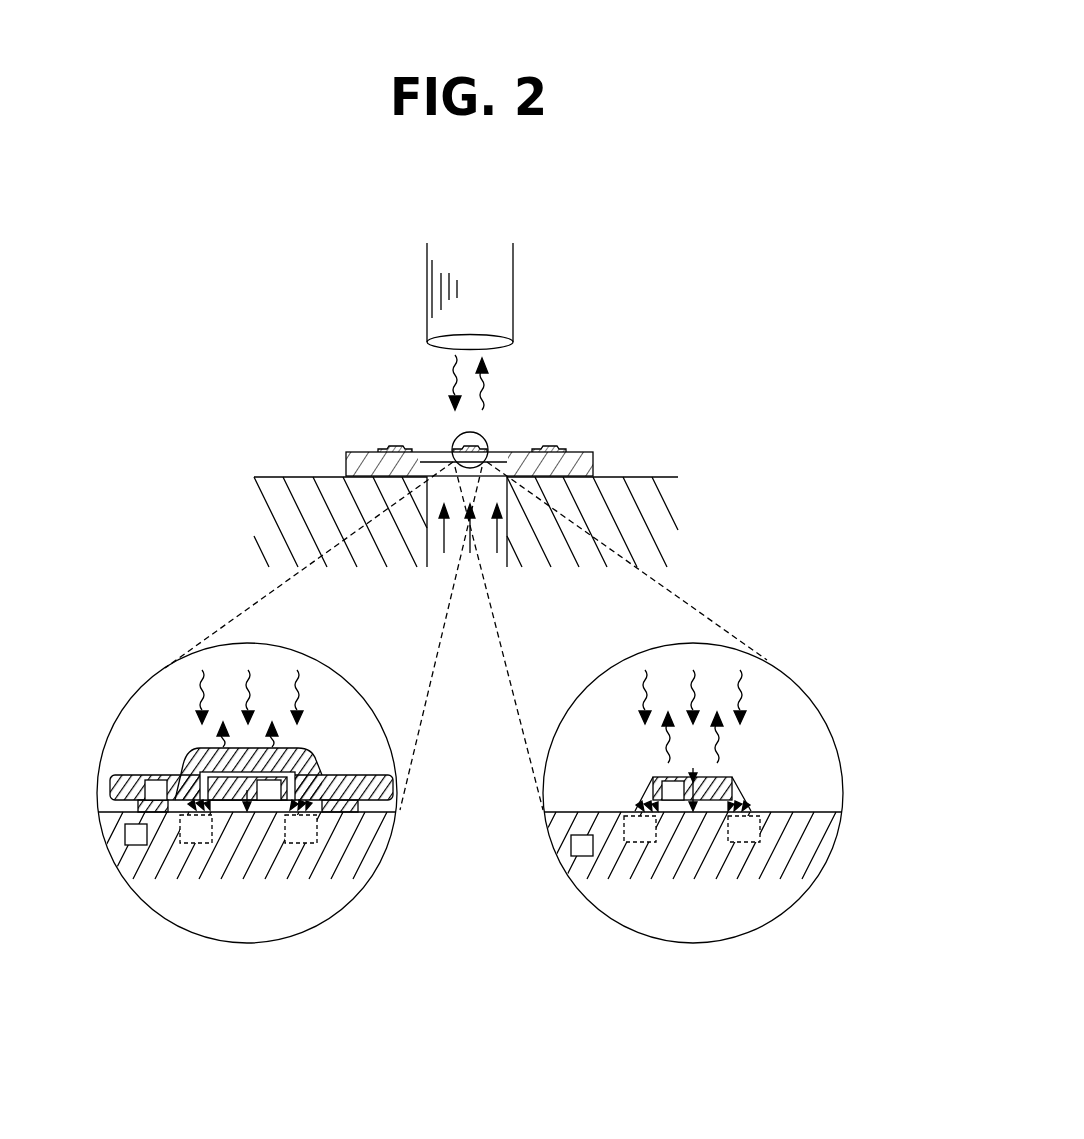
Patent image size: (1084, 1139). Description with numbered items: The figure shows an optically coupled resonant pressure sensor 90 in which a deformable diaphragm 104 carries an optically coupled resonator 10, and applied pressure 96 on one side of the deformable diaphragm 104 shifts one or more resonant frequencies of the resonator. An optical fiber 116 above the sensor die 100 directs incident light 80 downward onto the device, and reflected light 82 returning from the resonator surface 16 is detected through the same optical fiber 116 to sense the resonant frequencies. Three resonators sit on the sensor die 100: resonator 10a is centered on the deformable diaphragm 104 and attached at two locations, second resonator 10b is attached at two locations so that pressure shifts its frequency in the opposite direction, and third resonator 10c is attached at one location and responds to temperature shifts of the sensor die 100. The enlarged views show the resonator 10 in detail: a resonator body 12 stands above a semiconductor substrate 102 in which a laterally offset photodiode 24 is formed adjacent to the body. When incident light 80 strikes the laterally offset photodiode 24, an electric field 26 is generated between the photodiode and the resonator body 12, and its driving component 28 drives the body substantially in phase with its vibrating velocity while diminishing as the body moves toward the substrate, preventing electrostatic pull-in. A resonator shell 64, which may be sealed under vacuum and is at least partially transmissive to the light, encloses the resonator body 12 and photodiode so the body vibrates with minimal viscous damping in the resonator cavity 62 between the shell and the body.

The optically coupled resonant pressure sensor 90 is at (303, 292).
The optical fiber 116 is at (513, 270).
The incident light 80 is at (450, 392).
The reflected light 82 is at (480, 382).
The sensor die 100 is at (593, 457).
The resonator 10a is at (487, 440).
The second resonator 10b is at (547, 446).
The third resonator 10c is at (397, 448).
The applied pressure 96 is at (500, 527).
The deformable diaphragm 104 is at (523, 473).
The optically coupled resonator 10 is at (157, 733).
The resonator body 12 is at (233, 800).
The semiconductor substrate 102 is at (397, 817).
The laterally offset photodiode 24 is at (320, 827).
The electric field 26 is at (330, 778).
The resonator surface 16 is at (323, 766).
The driving component 28 is at (262, 800).
The resonator cavity 62 is at (283, 771).
The resonator shell 64 is at (305, 750).